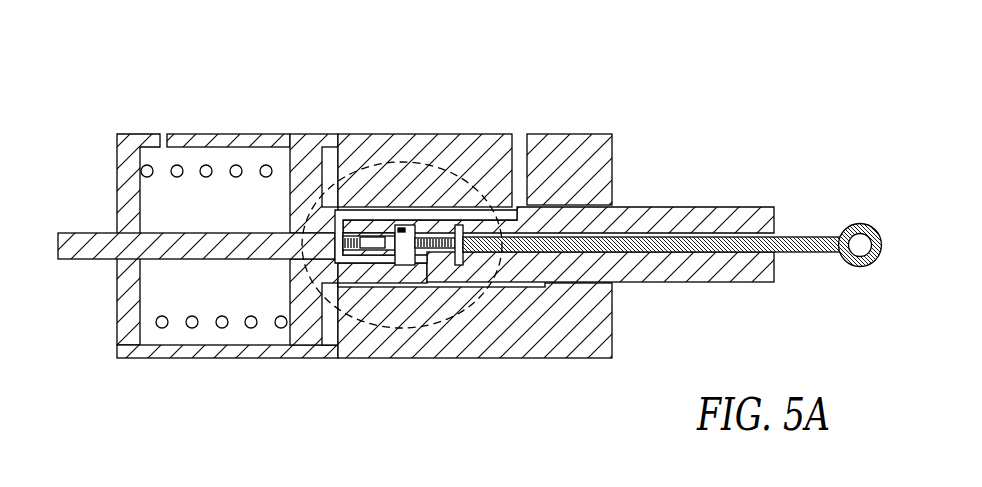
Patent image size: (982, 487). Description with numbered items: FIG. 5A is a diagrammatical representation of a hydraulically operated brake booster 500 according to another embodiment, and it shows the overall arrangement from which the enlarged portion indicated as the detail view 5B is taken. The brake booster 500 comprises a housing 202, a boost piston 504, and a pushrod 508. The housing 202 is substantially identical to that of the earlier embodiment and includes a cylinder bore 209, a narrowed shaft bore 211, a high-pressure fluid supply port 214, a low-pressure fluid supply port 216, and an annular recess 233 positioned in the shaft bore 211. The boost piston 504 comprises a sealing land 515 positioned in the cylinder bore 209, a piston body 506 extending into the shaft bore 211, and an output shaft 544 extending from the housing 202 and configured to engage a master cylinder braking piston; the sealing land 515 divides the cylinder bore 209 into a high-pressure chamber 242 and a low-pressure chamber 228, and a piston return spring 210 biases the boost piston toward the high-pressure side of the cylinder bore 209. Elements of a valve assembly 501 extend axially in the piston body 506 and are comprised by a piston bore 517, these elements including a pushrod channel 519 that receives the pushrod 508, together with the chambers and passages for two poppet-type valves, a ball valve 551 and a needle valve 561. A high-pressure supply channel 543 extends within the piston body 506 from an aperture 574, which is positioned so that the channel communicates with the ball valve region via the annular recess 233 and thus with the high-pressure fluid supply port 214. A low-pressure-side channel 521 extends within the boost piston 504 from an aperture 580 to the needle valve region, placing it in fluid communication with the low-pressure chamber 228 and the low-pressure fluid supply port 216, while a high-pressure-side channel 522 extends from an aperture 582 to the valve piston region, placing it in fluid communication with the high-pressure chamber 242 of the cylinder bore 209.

The hydraulically operated brake booster 500 is at (469, 235).
The low-pressure fluid supply port 216 is at (163, 134).
The boost piston 504 is at (293, 207).
The sealing land 515 is at (330, 152).
The high-pressure chamber 242 is at (337, 150).
The ball valve 551 is at (375, 216).
The valve assembly 501 is at (406, 180).
The high-pressure supply channel 543 is at (437, 212).
The aperture 574 is at (486, 192).
The high-pressure fluid supply port 214 is at (521, 140).
The housing 202 is at (586, 160).
The annular recess 233 is at (540, 207).
The piston bore 517 is at (660, 208).
The shaft bore 211 is at (575, 276).
The pushrod 508 is at (710, 240).
The pushrod channel 519 is at (787, 252).
The piston body 506 is at (527, 290).
The detail view FIG. 5B is at (452, 318).
The needle valve 561 is at (445, 262).
The low-pressure-side channel 521 is at (405, 263).
The aperture 582 is at (337, 258).
The high-pressure-side channel 522 is at (372, 255).
The aperture 580 is at (300, 268).
The cylinder bore 209 is at (203, 343).
The piston return spring 210 is at (160, 330).
The low-pressure chamber 228 is at (155, 208).
The output shaft 544 is at (77, 247).